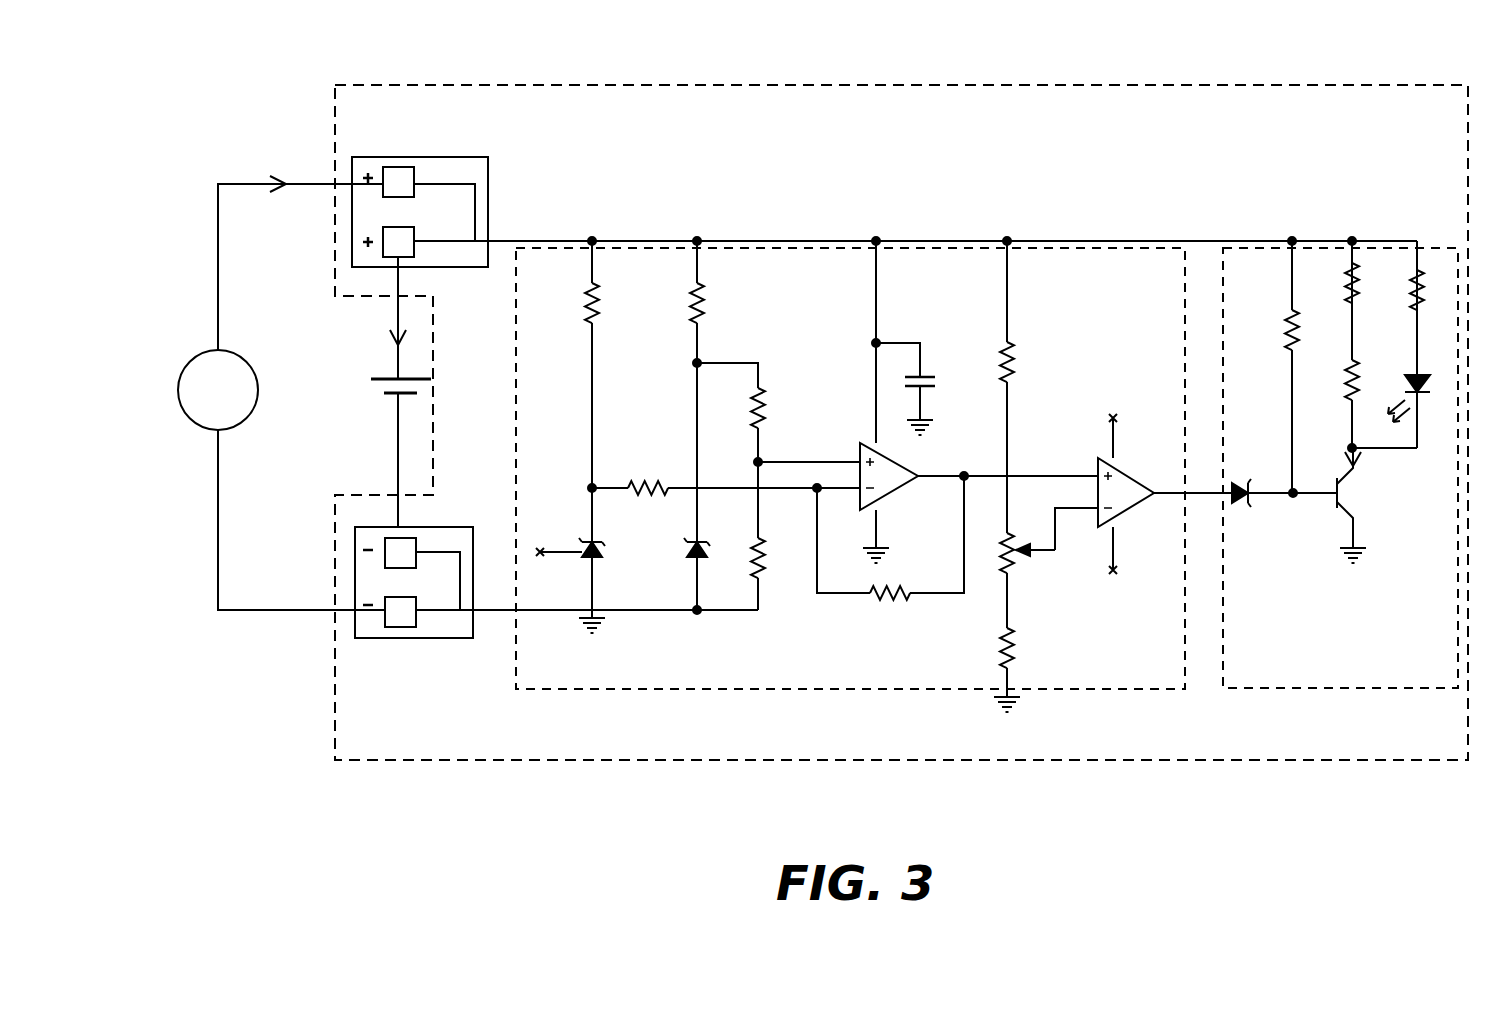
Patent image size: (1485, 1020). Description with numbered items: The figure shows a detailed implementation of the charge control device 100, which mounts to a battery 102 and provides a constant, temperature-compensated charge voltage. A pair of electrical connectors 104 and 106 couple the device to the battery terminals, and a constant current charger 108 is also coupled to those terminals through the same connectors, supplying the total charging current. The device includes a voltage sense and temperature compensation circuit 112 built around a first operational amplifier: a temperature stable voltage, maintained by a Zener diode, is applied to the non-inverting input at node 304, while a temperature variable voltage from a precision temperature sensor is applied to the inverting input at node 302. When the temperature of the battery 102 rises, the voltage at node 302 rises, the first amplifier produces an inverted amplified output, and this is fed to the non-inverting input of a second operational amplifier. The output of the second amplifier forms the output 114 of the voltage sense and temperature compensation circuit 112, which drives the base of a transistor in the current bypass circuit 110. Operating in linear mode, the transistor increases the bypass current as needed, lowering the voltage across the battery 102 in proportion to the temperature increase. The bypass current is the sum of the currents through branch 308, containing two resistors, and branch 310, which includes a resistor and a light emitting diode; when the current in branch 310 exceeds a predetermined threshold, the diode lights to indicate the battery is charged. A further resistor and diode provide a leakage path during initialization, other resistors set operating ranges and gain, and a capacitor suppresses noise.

The charge control device 100 is at (860, 85).
The battery 102 is at (385, 385).
The electrical connector 104 is at (400, 157).
The electrical connector 106 is at (395, 638).
The constant current charger 108 is at (178, 392).
The current bypass circuit 110 is at (1338, 652).
The voltage sense and temperature compensation circuit 112 is at (874, 474).
The output 114 is at (1205, 488).
The node 302 is at (817, 490).
The node 304 is at (760, 460).
The branch 308 is at (1352, 262).
The branch 310 is at (1417, 268).